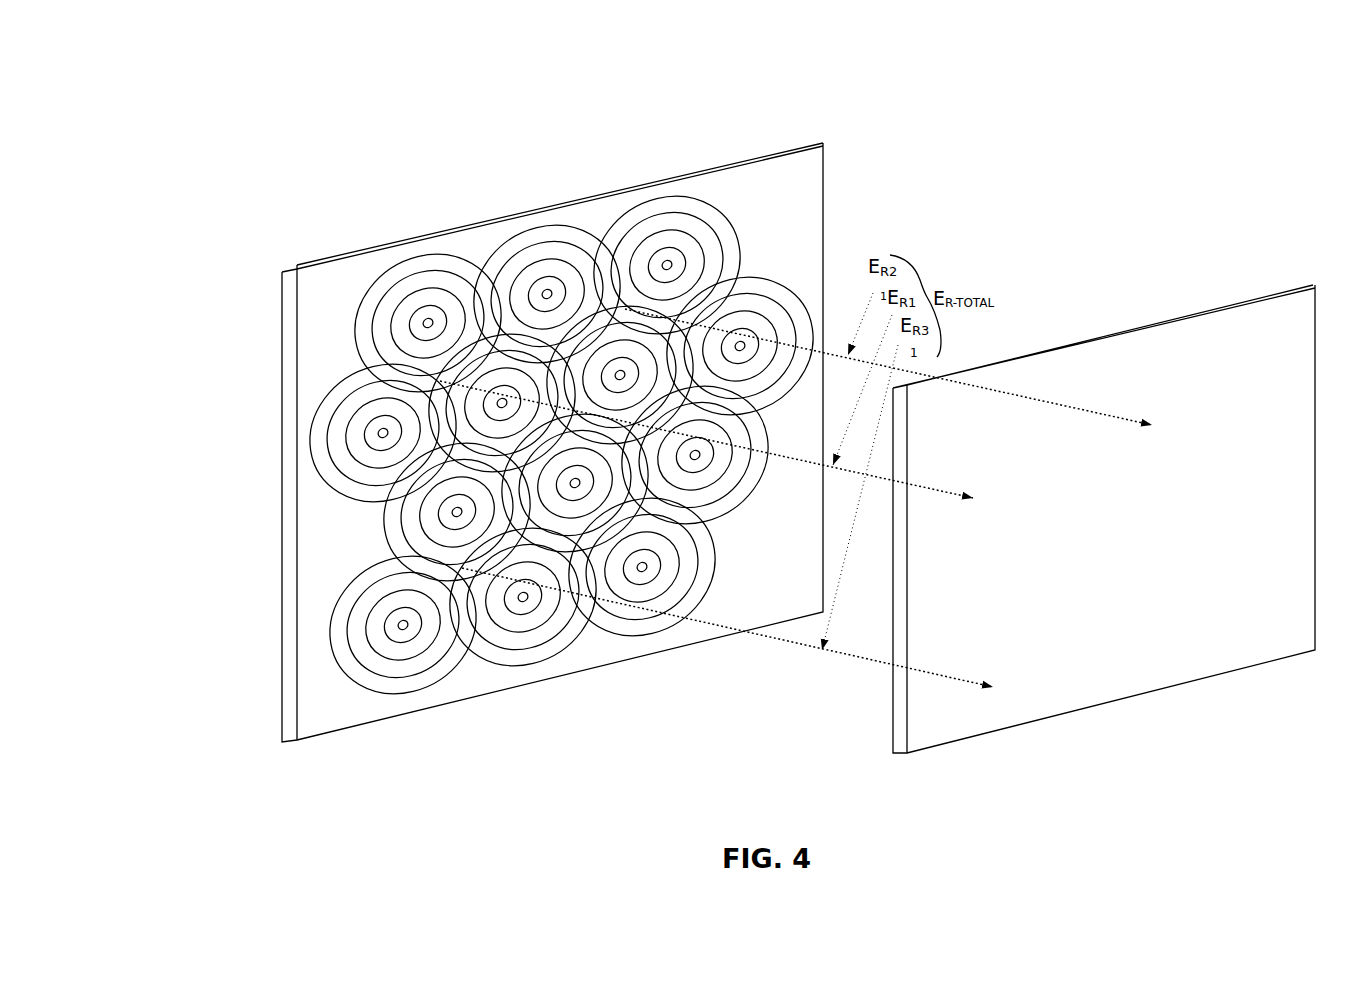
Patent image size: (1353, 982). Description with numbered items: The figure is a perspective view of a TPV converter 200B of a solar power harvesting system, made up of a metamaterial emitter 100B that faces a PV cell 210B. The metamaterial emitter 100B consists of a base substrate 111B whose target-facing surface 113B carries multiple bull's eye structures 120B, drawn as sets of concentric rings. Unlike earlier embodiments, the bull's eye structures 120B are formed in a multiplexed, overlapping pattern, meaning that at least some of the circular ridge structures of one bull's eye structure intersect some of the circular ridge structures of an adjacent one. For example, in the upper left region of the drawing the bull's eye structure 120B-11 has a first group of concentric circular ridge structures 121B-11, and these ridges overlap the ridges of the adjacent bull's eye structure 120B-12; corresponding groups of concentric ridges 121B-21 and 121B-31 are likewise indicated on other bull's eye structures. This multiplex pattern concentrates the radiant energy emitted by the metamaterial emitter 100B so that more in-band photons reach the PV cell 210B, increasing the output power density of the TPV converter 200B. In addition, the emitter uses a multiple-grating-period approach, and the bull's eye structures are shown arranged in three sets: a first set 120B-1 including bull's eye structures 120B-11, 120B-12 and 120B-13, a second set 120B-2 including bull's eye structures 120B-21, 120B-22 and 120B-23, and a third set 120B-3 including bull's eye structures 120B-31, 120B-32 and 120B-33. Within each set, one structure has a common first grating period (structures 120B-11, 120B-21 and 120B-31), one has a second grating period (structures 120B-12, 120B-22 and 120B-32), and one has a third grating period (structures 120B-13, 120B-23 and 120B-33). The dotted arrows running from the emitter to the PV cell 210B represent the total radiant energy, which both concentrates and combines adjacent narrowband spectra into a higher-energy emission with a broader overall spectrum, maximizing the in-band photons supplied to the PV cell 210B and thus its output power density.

The metamaterial emitter 100B is at (378, 147).
The base substrate 111B is at (777, 152).
The target-facing surface 113B is at (790, 187).
The bull's eye structures 120B is at (770, 280).
The first set 120B-1 is at (340, 197).
The bull's eye structure 120B-11 is at (333, 388).
The bull's eye structure 120B-12 is at (497, 398).
The bull's eye structure 120B-13 is at (371, 278).
The second set 120B-2 is at (583, 100).
The bull's eye structure 120B-21 is at (510, 235).
The bull's eye structure 120B-22 is at (615, 368).
The bull's eye structure 120B-23 is at (635, 203).
The third set 120B-3 is at (648, 700).
The bull's eye structure 120B-31 is at (440, 687).
The bull's eye structure 120B-32 is at (460, 522).
The bull's eye structure 120B-33 is at (585, 637).
The concentric circular ridge structures 121B-11 is at (345, 450).
The lens zones 121B-21 is at (449, 434).
The lens zones 121B-31 is at (425, 288).
The TPV converter 200B is at (1060, 177).
The PV cell 210B is at (1185, 313).